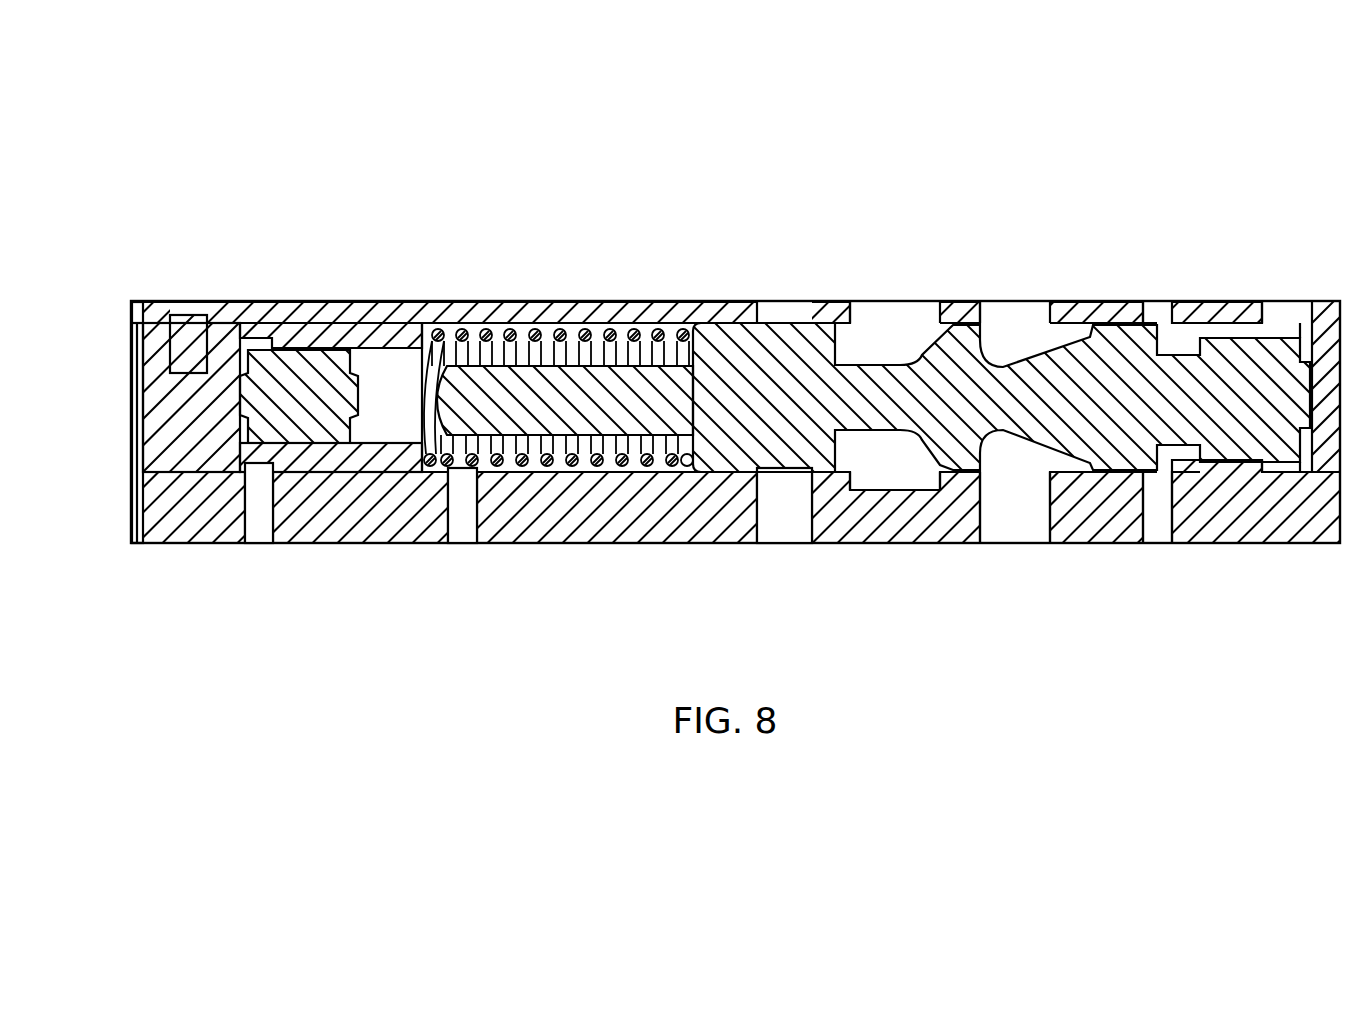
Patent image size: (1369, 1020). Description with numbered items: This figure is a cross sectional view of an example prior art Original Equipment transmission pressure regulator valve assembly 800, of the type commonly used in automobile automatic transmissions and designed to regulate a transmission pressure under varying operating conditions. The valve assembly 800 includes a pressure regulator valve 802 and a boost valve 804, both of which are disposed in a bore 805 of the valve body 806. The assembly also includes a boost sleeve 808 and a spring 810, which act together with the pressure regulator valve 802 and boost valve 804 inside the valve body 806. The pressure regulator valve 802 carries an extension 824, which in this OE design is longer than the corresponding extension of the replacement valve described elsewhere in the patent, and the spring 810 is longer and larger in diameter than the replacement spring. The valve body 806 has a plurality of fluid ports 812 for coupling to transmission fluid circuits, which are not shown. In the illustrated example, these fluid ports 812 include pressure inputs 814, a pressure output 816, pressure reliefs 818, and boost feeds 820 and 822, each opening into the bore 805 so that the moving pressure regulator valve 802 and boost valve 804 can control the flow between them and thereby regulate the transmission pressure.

The transmission pressure regulator valve assembly 800 is at (246, 170).
The pressure regulator valve 802 is at (1010, 432).
The boost valve 804 is at (263, 447).
The bore 805 is at (123, 320).
The valve body 806 is at (589, 300).
The boost sleeve 808 is at (357, 323).
The spring 810 is at (570, 456).
The fluid ports 812 is at (1209, 188).
The pressure inputs 814 is at (893, 301).
The pressure output 816 is at (782, 545).
The pressure reliefs 818 is at (1157, 301).
The boost feed 820 is at (262, 547).
The boost feed 822 is at (460, 547).
The extension 824 is at (512, 414).